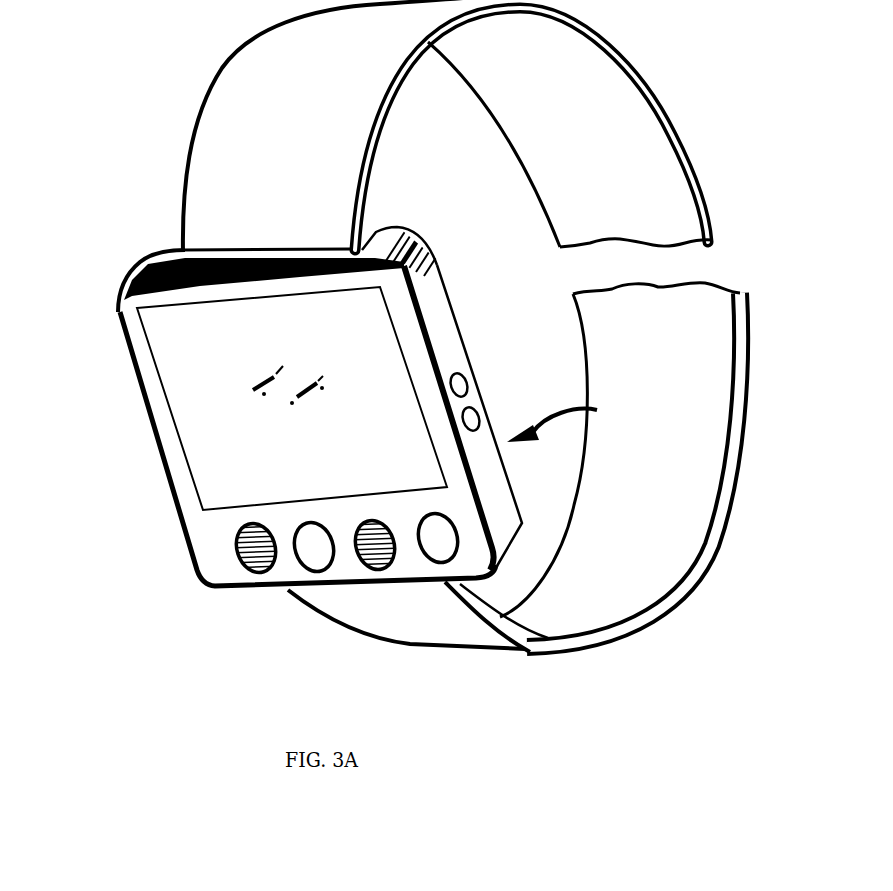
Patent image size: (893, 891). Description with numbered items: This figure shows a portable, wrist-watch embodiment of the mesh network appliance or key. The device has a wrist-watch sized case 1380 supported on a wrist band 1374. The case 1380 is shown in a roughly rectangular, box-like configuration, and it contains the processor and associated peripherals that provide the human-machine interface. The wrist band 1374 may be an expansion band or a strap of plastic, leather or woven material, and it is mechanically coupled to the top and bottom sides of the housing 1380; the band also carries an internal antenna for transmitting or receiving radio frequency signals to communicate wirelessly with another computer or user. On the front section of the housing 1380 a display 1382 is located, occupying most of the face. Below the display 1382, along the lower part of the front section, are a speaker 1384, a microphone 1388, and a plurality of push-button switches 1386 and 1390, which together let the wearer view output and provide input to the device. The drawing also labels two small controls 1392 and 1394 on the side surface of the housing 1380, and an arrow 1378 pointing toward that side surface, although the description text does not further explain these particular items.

The wrist band 1374 is at (643, 132).
The side surface direction arrow 1378 is at (597, 410).
The wrist-watch sized case 1380 is at (430, 282).
The display 1382 is at (213, 403).
The speaker 1384 is at (233, 545).
The push-button switch 1386 is at (306, 548).
The microphone 1388 is at (379, 544).
The push-button switch 1390 is at (435, 538).
The side button 1392 is at (460, 385).
The side button 1394 is at (473, 420).